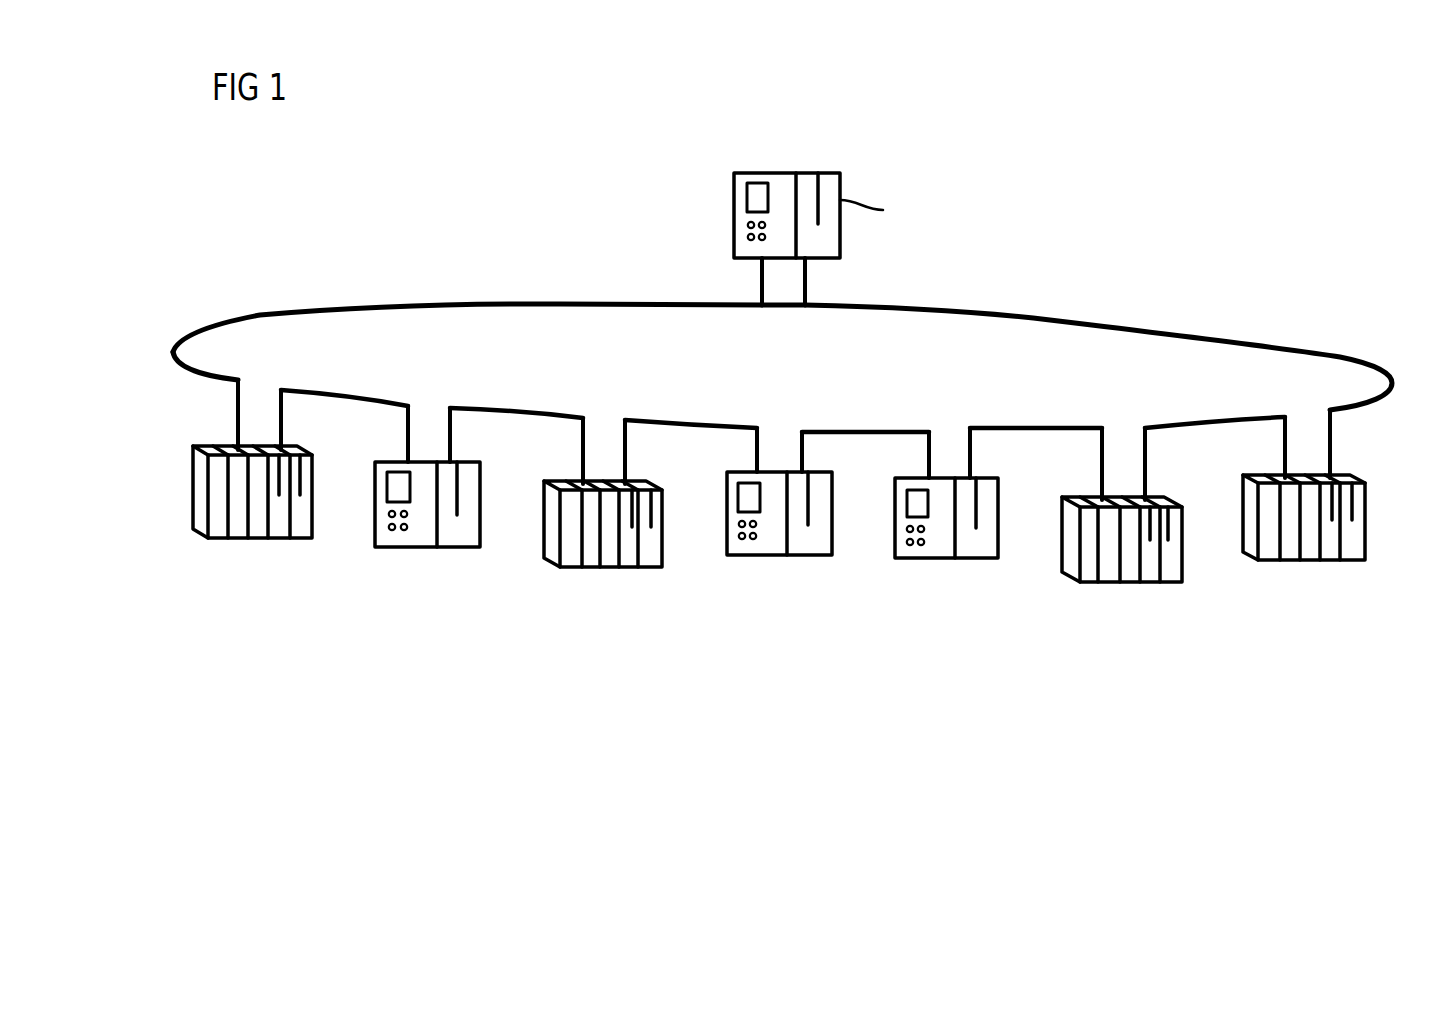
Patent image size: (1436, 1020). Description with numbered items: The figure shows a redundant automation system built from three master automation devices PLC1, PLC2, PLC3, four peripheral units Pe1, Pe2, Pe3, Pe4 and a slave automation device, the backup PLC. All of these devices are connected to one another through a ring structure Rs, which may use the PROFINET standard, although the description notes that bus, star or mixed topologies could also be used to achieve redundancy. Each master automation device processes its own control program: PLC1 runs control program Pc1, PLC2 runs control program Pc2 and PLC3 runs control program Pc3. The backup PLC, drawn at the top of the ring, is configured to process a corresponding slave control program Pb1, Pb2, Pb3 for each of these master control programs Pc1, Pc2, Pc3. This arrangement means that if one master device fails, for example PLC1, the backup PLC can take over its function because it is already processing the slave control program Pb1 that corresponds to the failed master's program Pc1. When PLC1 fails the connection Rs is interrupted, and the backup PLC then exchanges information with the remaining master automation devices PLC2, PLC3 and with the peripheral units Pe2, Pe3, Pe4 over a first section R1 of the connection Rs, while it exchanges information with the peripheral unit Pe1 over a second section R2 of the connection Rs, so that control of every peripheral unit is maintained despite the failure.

The first section of the connection R1 is at (940, 312).
The second section of the connection R2 is at (565, 305).
The ring structure Rs is at (1059, 311).
The slave control program Pb1 is at (869, 222).
The slave control program Pb2 is at (878, 239).
The slave control program Pb3 is at (878, 239).
The master automation device PLC1 is at (434, 512).
The master automation device PLC2 is at (781, 528).
The master automation device PLC3 is at (946, 530).
The control program Pc1 is at (428, 547).
The control program Pc2 is at (765, 555).
The control program Pc3 is at (915, 600).
The peripheral unit Pe1 is at (278, 538).
The peripheral unit Pe2 is at (612, 567).
The peripheral unit Pe3 is at (1137, 582).
The peripheral unit Pe4 is at (1318, 560).